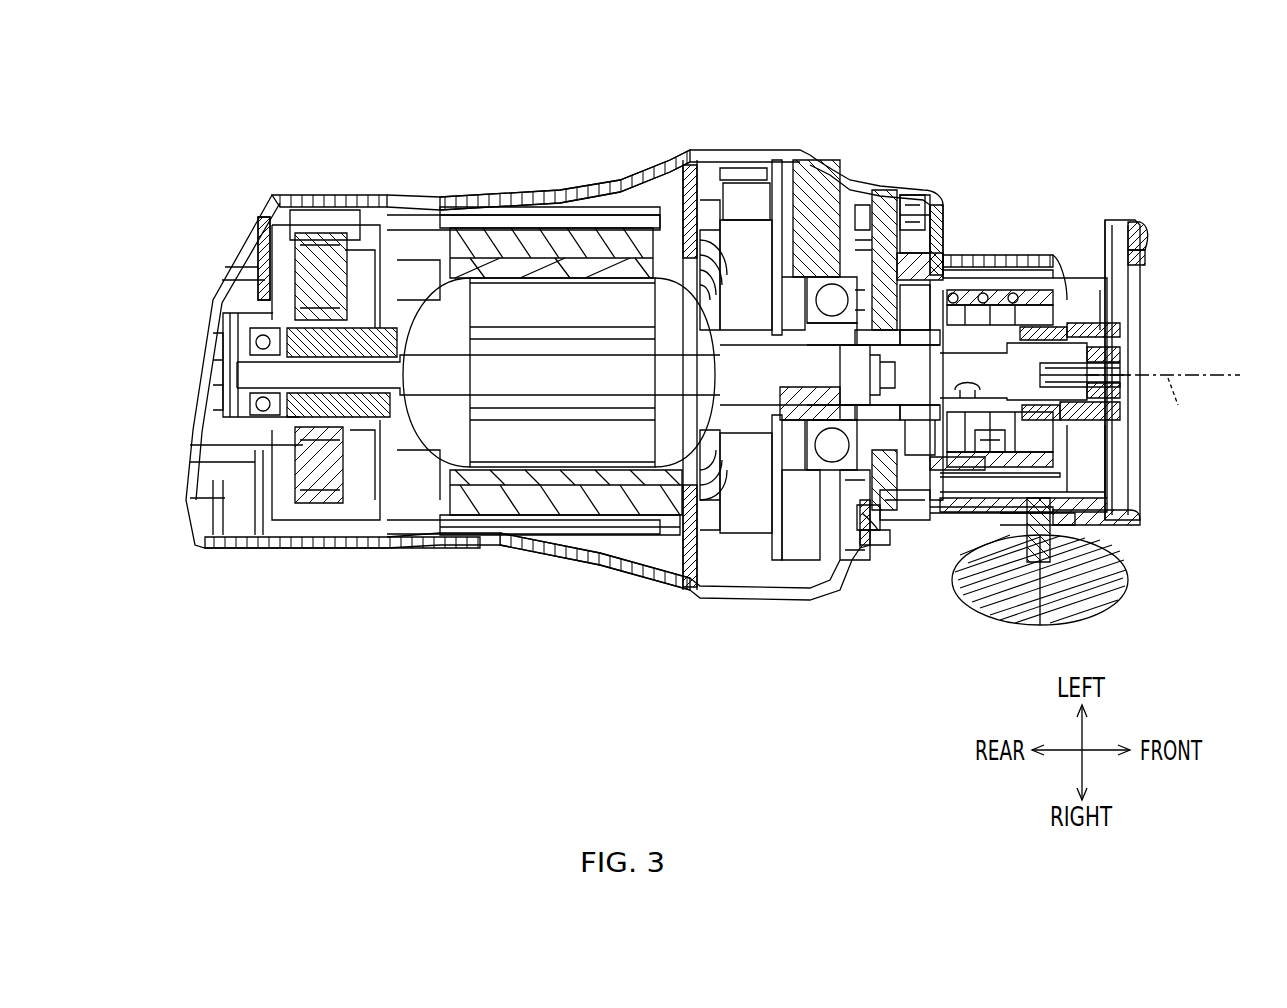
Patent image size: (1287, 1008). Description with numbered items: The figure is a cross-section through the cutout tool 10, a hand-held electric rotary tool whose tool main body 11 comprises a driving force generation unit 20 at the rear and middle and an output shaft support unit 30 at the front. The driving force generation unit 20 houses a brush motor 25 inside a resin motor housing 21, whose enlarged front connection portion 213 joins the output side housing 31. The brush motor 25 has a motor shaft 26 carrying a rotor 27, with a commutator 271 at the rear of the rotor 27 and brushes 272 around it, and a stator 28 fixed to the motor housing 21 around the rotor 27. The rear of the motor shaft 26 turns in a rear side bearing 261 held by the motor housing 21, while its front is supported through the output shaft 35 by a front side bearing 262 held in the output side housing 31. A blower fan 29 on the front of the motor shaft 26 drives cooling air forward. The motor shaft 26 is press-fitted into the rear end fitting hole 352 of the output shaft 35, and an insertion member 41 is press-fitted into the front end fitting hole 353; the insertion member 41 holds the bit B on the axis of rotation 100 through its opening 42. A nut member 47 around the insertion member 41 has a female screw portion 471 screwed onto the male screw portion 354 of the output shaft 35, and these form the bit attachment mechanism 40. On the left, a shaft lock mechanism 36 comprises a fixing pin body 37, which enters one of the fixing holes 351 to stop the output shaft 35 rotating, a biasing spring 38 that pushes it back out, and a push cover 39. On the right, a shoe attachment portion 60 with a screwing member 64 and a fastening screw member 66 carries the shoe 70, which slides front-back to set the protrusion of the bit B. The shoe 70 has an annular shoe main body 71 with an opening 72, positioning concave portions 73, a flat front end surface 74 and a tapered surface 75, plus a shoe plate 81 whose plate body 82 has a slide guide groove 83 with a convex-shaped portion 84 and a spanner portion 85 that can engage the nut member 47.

The cutout tool 10 is at (564, 323).
The tool main body 11 is at (564, 323).
The driving force generation unit 20 is at (458, 158).
The motor housing 21 is at (560, 193).
The front connection portion 213 is at (732, 143).
The brush motor 25 is at (447, 427).
The motor shaft 26 is at (760, 370).
The rotor 27 is at (568, 445).
The stator 28 is at (527, 505).
The blower fan 29 is at (735, 515).
The output shaft support unit 30 is at (955, 165).
The output side housing 31 is at (860, 550).
The output shaft 35 is at (992, 347).
The shaft lock mechanism 36 is at (920, 187).
The fixing pin body 37 is at (870, 200).
The biasing spring 38 is at (920, 223).
The push cover 39 is at (880, 190).
The bit attachment mechanism 40 is at (1110, 428).
The insertion member 41 is at (1057, 353).
The opening 42 is at (1123, 362).
The nut member 47 is at (1093, 333).
The female screw portion 471 is at (1120, 340).
The shoe attachment portion 60 is at (1137, 590).
The screwing member 64 is at (857, 522).
The fastening screw member 66 is at (1080, 610).
The shoe 70 is at (1185, 335).
The shoe main body 71 is at (1185, 370).
The opening 72 is at (1137, 300).
The positioning concave portions 73 is at (1143, 260).
The front end surface 74 is at (1143, 240).
The tapered surface 75 is at (1155, 220).
The shoe plate 81 is at (1093, 527).
The plate body 82 is at (996, 581).
The slide guide groove 83 is at (955, 520).
The convex-shaped portion 84 is at (897, 520).
The spanner portion 85 is at (880, 533).
The axis of rotation 100 is at (1185, 377).
The rear side bearing 261 is at (248, 400).
The front side bearing 262 is at (837, 573).
The commutator 271 is at (352, 400).
The brushes 272 is at (317, 283).
The fixing holes 351 is at (927, 330).
The rear end fitting hole 352 is at (753, 560).
The front end fitting hole 353 is at (987, 400).
The male screw portion 354 is at (1037, 347).
The bit B is at (1176, 408).